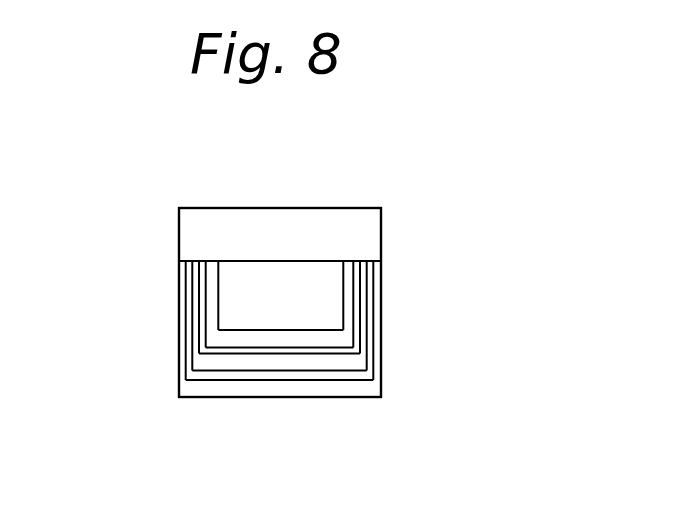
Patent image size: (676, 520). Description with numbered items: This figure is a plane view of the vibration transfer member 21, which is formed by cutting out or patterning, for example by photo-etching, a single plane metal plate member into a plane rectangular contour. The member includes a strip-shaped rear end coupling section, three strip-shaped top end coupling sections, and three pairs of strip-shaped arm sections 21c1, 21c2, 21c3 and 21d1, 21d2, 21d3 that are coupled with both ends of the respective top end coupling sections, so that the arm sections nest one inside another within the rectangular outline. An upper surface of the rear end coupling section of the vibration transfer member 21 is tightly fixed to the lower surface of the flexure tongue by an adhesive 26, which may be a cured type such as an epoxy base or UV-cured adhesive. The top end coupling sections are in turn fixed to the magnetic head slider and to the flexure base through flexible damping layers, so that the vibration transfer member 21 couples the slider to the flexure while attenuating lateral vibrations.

The vibration transfer member 21 is at (424, 210).
The adhesive 26 is at (330, 227).
The arm section 21d3 is at (213, 280).
The arm section 21d2 is at (194, 305).
The arm section 21d1 is at (183, 350).
The arm section 21c3 is at (352, 281).
The arm section 21c2 is at (363, 307).
The arm section 21c1 is at (376, 356).